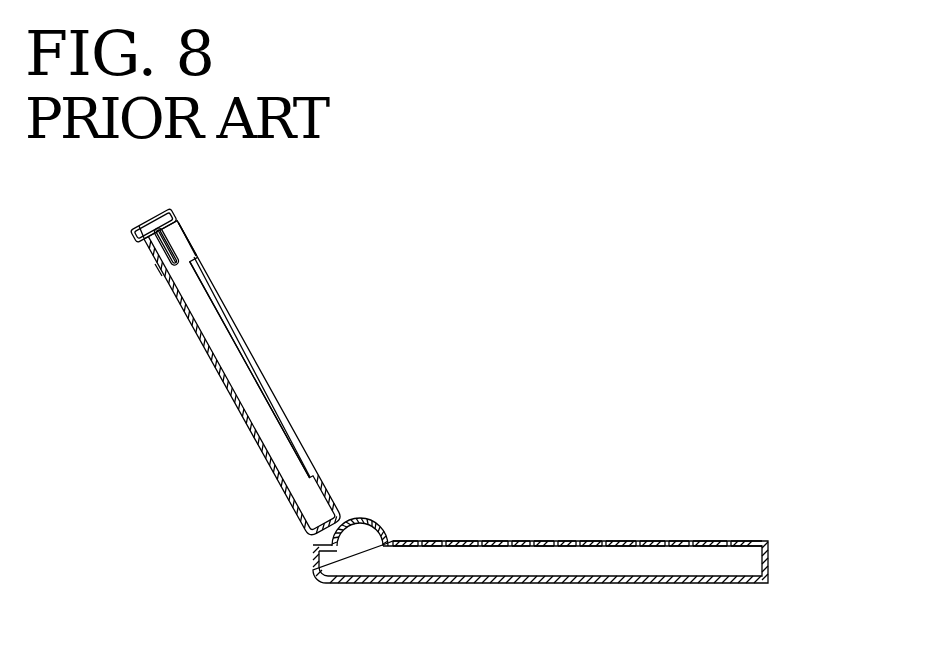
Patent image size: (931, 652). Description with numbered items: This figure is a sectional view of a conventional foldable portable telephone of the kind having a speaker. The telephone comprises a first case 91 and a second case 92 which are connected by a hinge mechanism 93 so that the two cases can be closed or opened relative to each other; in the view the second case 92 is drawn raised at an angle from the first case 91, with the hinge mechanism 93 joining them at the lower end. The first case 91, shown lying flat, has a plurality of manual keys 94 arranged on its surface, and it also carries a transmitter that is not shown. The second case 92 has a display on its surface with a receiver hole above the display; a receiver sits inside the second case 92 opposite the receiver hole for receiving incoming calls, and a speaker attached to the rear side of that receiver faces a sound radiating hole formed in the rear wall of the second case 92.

The first case 91 is at (589, 530).
The second case 92 is at (236, 374).
The hinge mechanism 93 is at (370, 524).
The manual keys 94 is at (495, 542).